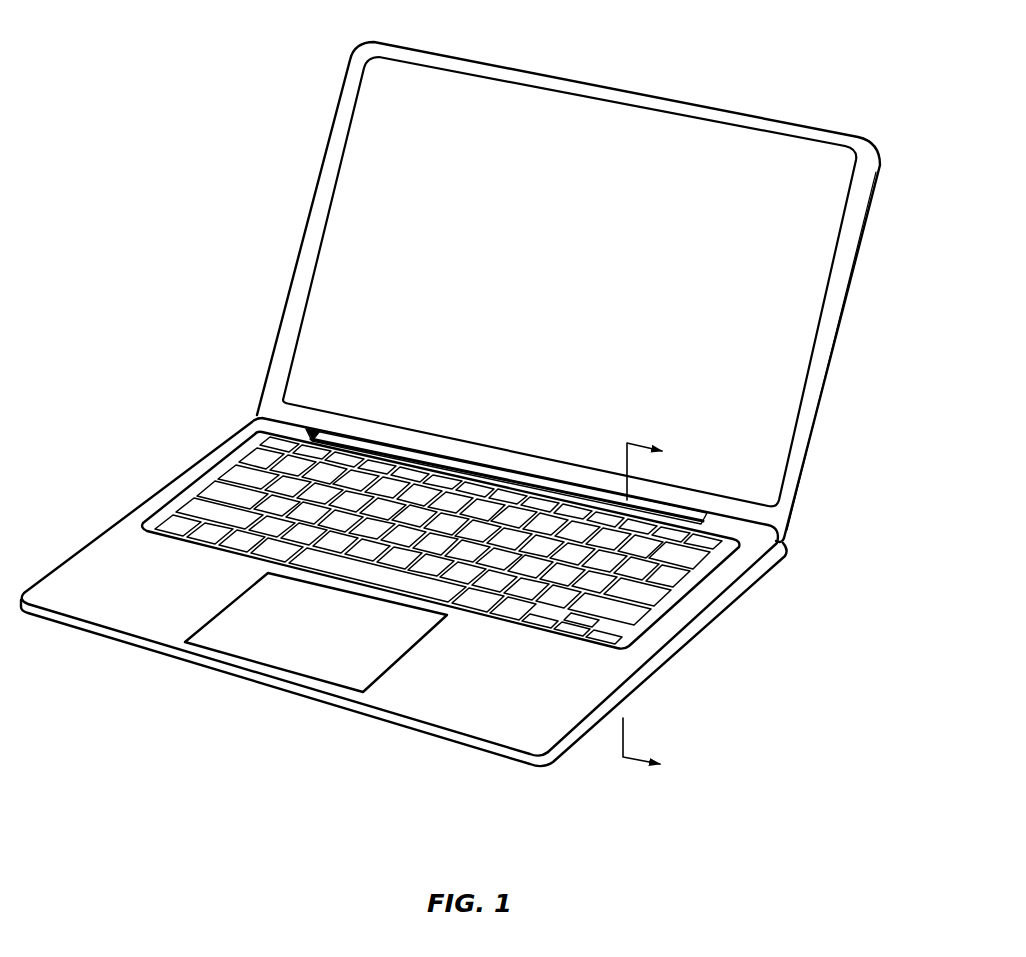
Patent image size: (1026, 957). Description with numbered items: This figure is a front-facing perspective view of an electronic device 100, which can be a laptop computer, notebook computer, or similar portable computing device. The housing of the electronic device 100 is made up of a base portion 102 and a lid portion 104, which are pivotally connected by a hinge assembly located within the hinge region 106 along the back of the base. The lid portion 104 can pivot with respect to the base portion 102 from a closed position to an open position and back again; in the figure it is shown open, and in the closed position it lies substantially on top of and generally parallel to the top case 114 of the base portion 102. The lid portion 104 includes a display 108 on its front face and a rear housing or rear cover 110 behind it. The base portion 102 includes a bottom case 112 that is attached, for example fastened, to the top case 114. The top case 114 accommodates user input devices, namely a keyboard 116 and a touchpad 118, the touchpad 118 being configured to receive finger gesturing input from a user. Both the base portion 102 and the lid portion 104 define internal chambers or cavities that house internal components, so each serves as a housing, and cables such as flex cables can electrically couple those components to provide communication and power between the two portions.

The electronic device 100 is at (222, 78).
The base portion 102 is at (137, 502).
The lid portion 104 is at (290, 247).
The hinge region 106 is at (513, 468).
The display 108 is at (588, 296).
The rear cover 110 is at (835, 358).
The bottom case 112 is at (633, 692).
The top case 114 is at (437, 727).
The keyboard 116 is at (517, 632).
The touchpad 118 is at (338, 645).